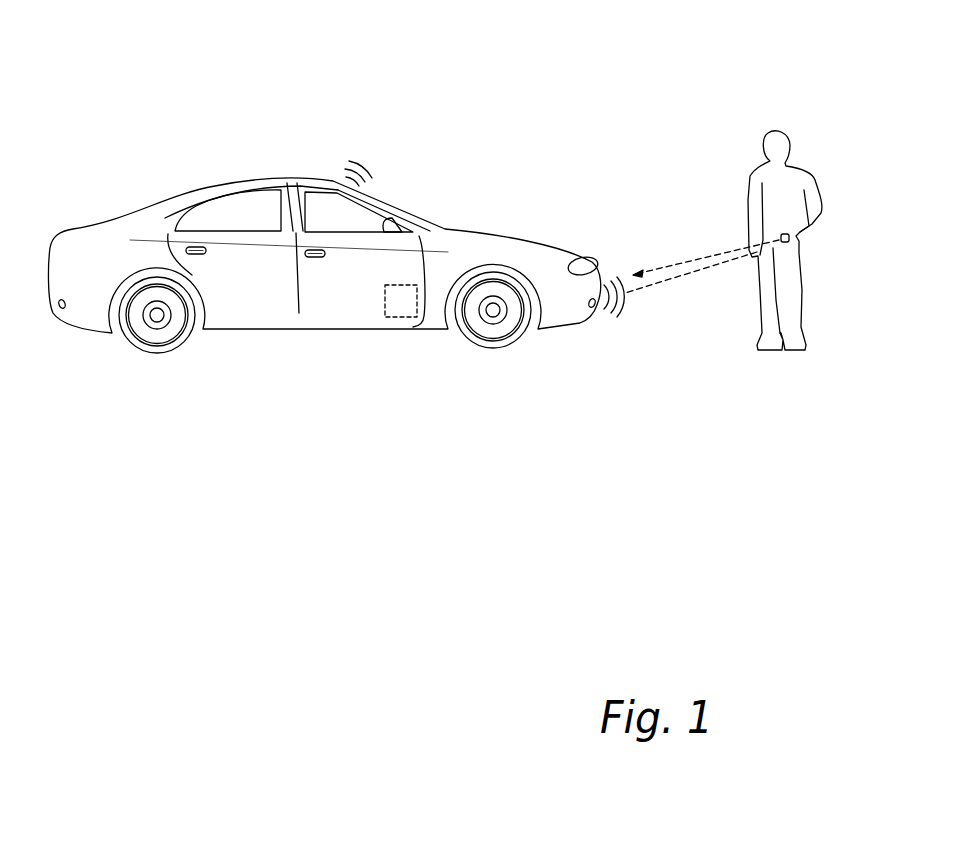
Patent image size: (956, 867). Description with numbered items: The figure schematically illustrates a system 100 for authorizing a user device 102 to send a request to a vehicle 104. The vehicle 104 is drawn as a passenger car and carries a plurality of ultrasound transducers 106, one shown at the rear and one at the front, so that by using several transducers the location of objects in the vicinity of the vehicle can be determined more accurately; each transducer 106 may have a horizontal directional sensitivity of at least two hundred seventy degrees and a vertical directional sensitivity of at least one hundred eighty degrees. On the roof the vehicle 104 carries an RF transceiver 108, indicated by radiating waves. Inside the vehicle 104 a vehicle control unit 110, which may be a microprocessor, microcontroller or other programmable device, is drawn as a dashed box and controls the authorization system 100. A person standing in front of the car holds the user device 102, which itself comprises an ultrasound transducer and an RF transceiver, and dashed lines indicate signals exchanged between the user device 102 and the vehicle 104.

The system 100 is at (574, 96).
The user device 102 is at (781, 236).
The vehicle 104 is at (197, 190).
The ultrasound transducer 106 is at (62, 312).
The RF transceiver 108 is at (338, 183).
The vehicle control unit 110 is at (405, 317).